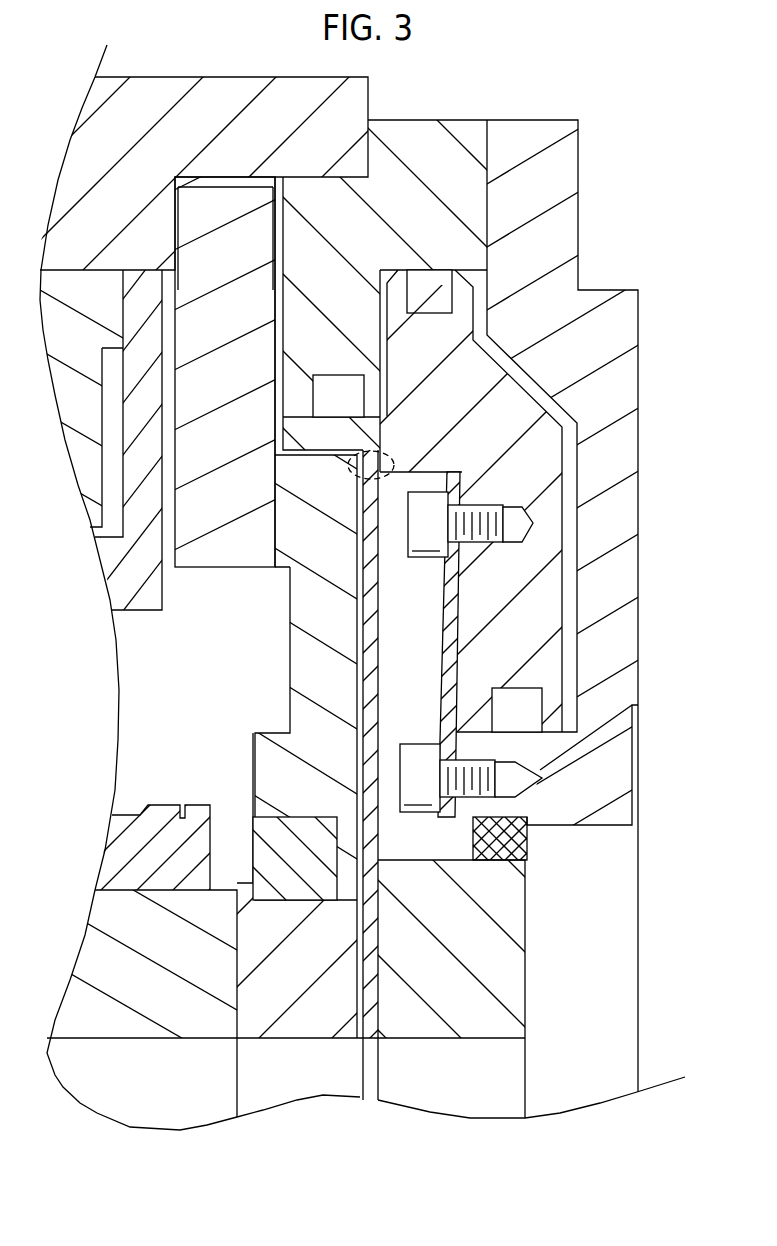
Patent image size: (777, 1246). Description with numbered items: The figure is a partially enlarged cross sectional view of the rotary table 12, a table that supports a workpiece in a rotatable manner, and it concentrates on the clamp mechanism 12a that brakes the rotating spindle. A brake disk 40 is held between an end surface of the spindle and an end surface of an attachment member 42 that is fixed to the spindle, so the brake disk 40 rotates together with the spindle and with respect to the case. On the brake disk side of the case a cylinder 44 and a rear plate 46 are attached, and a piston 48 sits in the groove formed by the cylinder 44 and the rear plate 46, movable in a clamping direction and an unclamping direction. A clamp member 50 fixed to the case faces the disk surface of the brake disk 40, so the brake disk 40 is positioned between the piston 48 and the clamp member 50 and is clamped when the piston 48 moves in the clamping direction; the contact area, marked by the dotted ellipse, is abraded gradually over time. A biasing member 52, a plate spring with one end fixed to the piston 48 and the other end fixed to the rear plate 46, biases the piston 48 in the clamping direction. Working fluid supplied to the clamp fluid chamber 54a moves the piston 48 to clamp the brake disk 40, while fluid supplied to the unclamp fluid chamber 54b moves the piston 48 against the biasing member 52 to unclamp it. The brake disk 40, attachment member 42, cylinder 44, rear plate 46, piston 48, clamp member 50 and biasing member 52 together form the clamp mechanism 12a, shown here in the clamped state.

The rotary table 12 is at (546, 42).
The clamp mechanism 12a is at (590, 164).
The brake disk 40 is at (370, 664).
The attachment member 42 is at (497, 977).
The cylinder 44 is at (414, 122).
The rear plate 46 is at (600, 755).
The piston 48 is at (505, 398).
The clamp member 50 is at (322, 662).
The biasing member 52 is at (445, 608).
The clamp fluid chamber 54a is at (476, 279).
The unclamp fluid chamber 54b is at (388, 282).